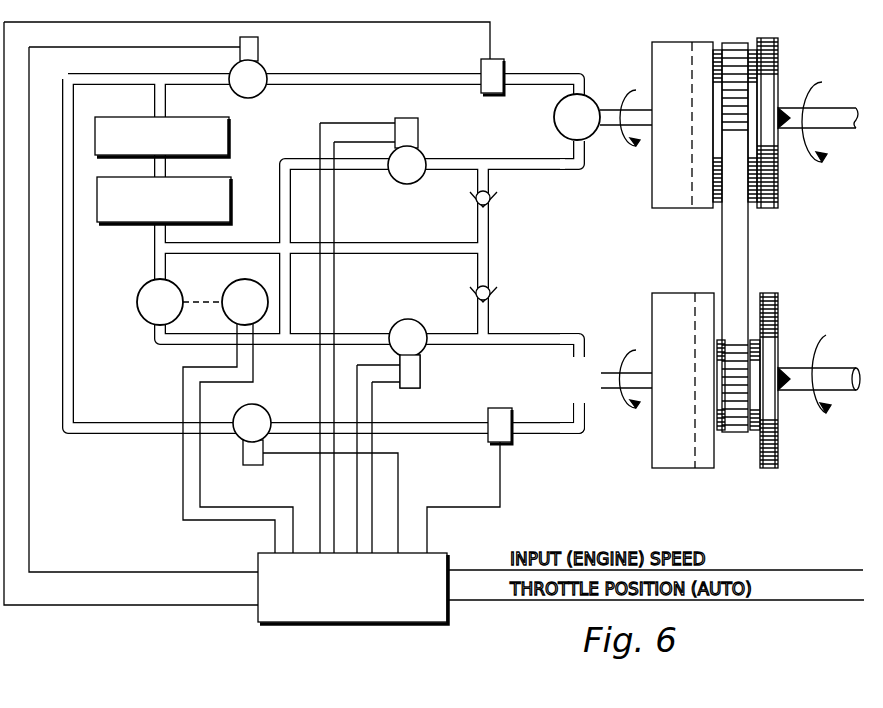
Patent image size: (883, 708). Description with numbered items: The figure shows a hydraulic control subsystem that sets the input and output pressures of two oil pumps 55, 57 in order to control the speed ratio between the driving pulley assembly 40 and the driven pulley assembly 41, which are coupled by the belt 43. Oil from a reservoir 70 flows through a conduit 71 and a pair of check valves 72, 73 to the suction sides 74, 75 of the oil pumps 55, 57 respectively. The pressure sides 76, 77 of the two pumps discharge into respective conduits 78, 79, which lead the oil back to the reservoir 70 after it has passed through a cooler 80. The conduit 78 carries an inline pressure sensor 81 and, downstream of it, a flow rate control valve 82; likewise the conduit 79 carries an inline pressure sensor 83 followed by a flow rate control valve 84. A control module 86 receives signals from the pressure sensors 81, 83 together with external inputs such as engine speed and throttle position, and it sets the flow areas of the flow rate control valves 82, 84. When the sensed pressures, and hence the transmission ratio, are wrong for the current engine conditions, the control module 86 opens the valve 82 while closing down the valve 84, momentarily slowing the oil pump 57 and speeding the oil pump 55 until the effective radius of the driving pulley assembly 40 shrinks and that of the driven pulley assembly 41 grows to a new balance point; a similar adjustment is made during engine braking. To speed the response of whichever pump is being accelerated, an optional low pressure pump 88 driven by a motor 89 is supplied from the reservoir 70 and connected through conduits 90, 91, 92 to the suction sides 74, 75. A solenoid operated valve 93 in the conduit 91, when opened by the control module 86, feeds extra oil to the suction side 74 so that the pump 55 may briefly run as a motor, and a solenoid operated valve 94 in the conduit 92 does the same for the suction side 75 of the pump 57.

The driving pulley assembly 40 is at (727, 123).
The driven pulley assembly 41 is at (730, 397).
The belt 43 is at (746, 250).
The oil pump 55 is at (597, 110).
The oil pump 57 is at (600, 372).
The reservoir 70 is at (233, 192).
The conduit 71 is at (423, 226).
The check valve 72 is at (498, 196).
The check valve 73 is at (498, 289).
The suction side 74 is at (588, 152).
The suction side 75 is at (586, 345).
The pressure side 76 is at (586, 92).
The pressure side 77 is at (588, 412).
The conduit 78 is at (394, 73).
The conduit 79 is at (438, 436).
The cooler 80 is at (232, 143).
The pressure sensor 81 is at (506, 62).
The flow rate control valve 82 is at (266, 68).
The pressure sensor 83 is at (512, 440).
The flow rate control valve 84 is at (266, 410).
The control module 86 is at (263, 553).
The low pressure pump 88 is at (138, 294).
The motor 89 is at (230, 290).
The conduit 90 is at (186, 347).
The conduit 91 is at (350, 172).
The conduit 92 is at (392, 324).
The solenoid operated valve 93 is at (424, 152).
The solenoid operated valve 94 is at (422, 380).